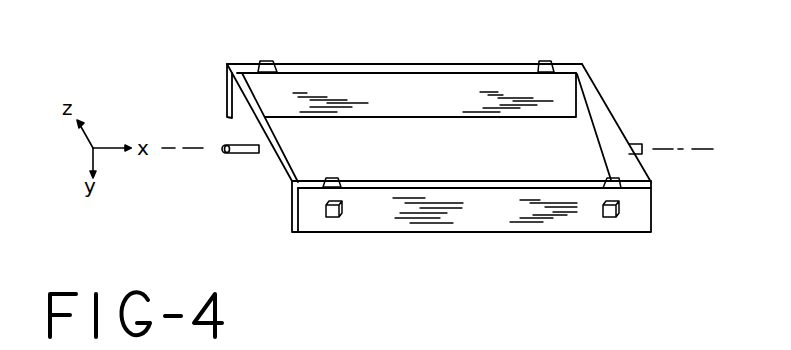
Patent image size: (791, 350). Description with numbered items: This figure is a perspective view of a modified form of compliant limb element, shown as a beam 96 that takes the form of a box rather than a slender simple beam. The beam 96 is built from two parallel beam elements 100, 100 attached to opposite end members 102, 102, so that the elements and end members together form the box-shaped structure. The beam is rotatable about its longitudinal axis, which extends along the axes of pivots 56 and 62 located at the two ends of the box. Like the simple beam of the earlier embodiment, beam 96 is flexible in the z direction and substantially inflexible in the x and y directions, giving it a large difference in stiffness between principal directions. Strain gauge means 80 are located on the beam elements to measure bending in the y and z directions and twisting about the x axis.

The beam 96 is at (483, 254).
The parallel beam elements 100 is at (393, 63).
The end members 102 is at (600, 100).
The strain gauge means 80 is at (262, 61).
The pivot 56 is at (224, 146).
The pivot 62 is at (643, 143).